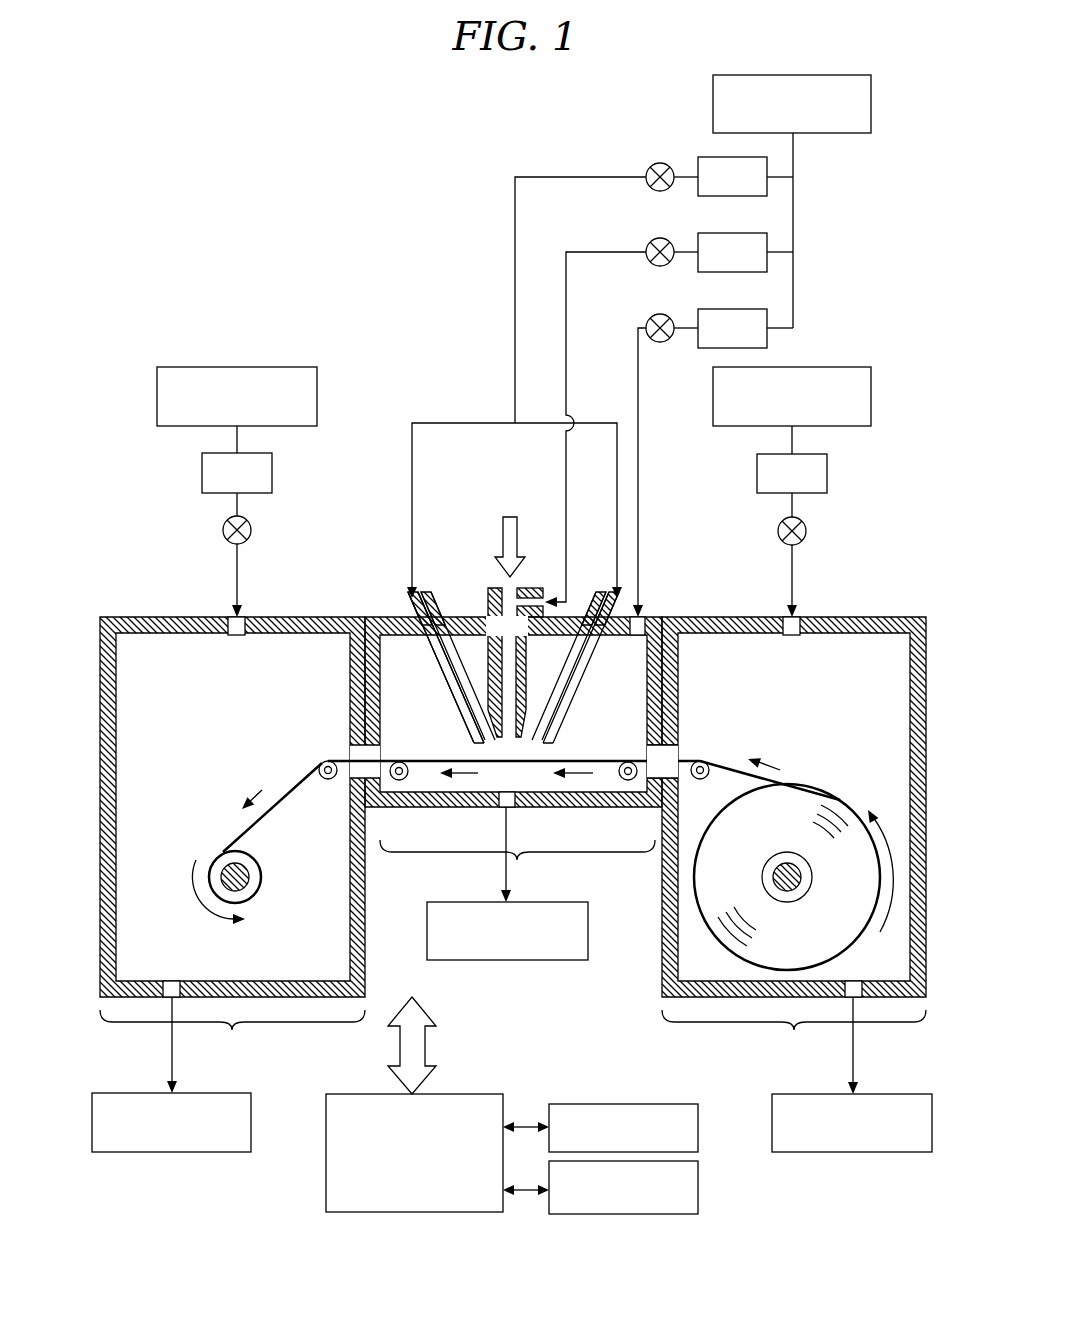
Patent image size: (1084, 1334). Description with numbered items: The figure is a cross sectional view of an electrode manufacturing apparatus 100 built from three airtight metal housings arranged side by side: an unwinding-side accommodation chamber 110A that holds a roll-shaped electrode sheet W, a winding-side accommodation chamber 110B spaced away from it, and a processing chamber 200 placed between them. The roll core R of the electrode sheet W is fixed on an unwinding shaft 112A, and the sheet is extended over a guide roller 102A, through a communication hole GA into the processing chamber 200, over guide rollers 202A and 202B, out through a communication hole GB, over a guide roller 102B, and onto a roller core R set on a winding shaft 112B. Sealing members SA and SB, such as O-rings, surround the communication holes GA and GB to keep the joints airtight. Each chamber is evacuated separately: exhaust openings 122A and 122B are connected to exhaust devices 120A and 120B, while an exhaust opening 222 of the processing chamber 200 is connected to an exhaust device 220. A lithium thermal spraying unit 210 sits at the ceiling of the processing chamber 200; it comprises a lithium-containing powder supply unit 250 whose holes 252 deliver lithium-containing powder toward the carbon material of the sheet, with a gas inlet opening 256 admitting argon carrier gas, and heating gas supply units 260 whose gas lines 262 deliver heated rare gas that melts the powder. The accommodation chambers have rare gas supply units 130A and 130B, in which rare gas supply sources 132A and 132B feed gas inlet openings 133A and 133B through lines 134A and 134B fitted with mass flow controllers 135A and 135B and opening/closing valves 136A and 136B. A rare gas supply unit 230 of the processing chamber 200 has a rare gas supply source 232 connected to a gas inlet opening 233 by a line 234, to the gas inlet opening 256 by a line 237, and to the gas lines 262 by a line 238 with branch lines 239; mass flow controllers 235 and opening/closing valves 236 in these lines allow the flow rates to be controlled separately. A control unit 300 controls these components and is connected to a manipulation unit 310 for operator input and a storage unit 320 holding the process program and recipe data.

The electrode manufacturing apparatus 100 is at (509, 644).
The unwinding-side accommodation chamber 110A is at (762, 821).
The winding-side accommodation chamber 110B is at (232, 819).
The unwinding shaft 112A is at (705, 894).
The winding shaft 112B is at (263, 890).
The guide roller 102A is at (746, 754).
The guide roller 102B is at (281, 756).
The exhaust device 120A is at (852, 1074).
The exhaust device 120B is at (168, 1074).
The exhaust opening 122A is at (868, 974).
The exhaust opening 122B is at (172, 970).
The rare gas supply unit 130A is at (821, 450).
The rare gas supply unit 130B is at (233, 450).
The rare gas supply source 132A is at (792, 377).
The rare gas supply source 132B is at (234, 377).
The gas inlet opening 133A is at (761, 607).
The gas inlet opening 133B is at (209, 607).
The line 134A is at (831, 581).
The line 134B is at (278, 580).
The mass flow controller 135A is at (819, 463).
The mass flow controller 135B is at (207, 463).
The opening/closing valve 136A is at (830, 516).
The opening/closing valve 136B is at (198, 519).
The processing chamber 200 is at (514, 734).
The guide roller 202A is at (615, 800).
The guide roller 202B is at (406, 800).
The lithium thermal spraying unit 210 is at (509, 749).
The exhaust device 220 is at (506, 883).
The exhaust opening 222 is at (485, 816).
The rare gas supply unit 230 is at (696, 346).
The rare gas supply source 232 is at (819, 104).
The gas inlet opening 233 is at (656, 607).
The line 234 is at (671, 472).
The mass flow controller 235 is at (729, 233).
The opening/closing valve 236 is at (650, 230).
The line 237 is at (583, 429).
The line 238 is at (556, 300).
The branch line 239 is at (376, 460).
The lithium-containing powder supply unit 250 is at (500, 633).
The hole 252 is at (475, 561).
The gas inlet opening 256 is at (538, 573).
The heating gas supply unit 260 is at (475, 628).
The gas line 262 is at (493, 569).
The control unit 300 is at (516, 1105).
The manipulation unit 310 is at (653, 1187).
The storage unit 320 is at (653, 1128).
The electrode sheet W is at (793, 863).
The roll core R is at (512, 878).
The sealing member SA is at (692, 715).
The sealing member SB is at (337, 715).
The communication hole GA is at (697, 752).
The communication hole GB is at (329, 752).